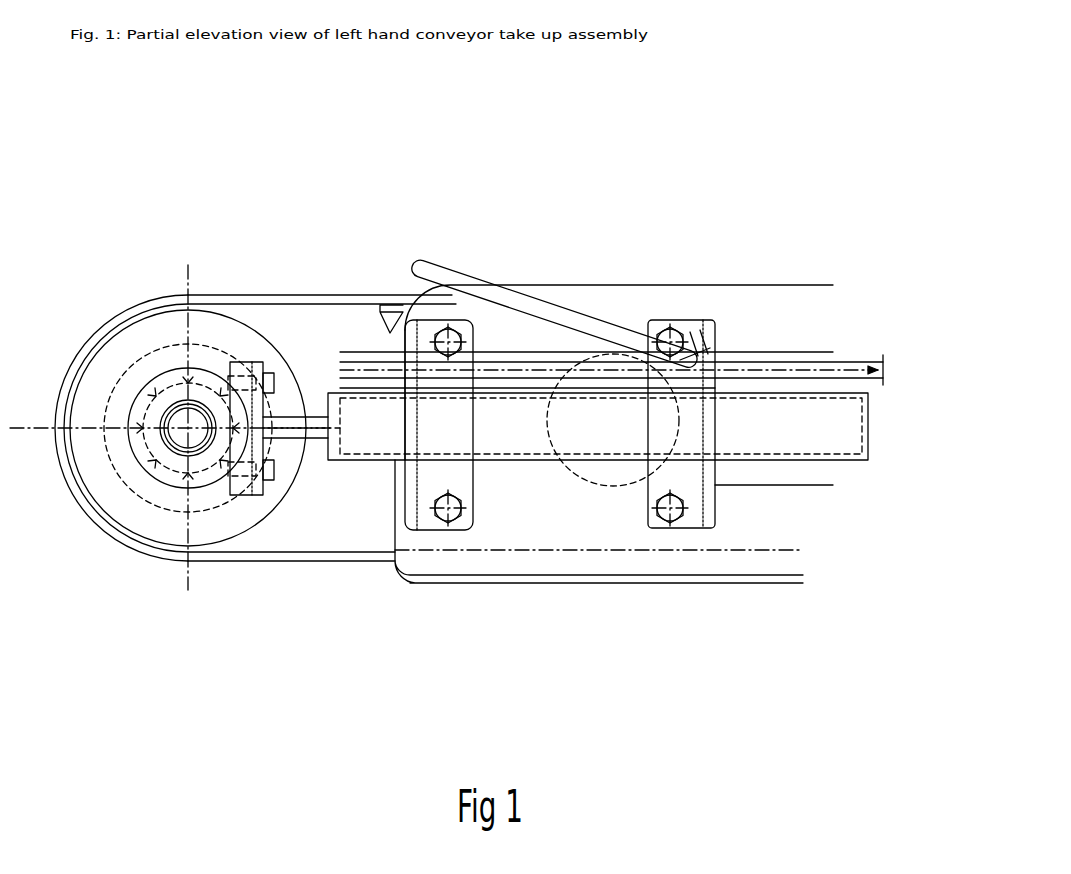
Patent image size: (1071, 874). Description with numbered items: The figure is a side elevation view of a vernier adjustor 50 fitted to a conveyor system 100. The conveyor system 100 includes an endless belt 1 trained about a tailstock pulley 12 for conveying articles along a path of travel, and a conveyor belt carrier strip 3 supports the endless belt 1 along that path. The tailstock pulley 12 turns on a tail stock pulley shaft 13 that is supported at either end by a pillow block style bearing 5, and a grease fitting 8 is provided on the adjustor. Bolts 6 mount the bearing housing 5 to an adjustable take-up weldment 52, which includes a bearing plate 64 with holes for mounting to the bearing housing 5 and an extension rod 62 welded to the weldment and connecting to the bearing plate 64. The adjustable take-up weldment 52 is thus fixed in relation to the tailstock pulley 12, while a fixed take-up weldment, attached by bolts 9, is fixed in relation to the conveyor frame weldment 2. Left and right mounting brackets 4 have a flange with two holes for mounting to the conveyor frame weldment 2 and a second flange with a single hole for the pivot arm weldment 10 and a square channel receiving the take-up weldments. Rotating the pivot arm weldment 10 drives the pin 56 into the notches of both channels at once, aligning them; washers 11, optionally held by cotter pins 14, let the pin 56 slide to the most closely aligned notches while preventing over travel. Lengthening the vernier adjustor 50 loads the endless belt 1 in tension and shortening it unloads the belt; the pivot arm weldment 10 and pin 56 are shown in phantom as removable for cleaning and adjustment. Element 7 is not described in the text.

The endless belt 1 is at (261, 292).
The conveyor frame weldment 2 is at (718, 283).
The conveyor belt carrier strip 3 is at (383, 302).
The mounting bracket 4 is at (717, 318).
The pillow block style bearing 5 is at (143, 495).
The bolts 6 is at (266, 500).
The take-up tube 7 is at (360, 462).
The grease fitting 8 is at (122, 428).
The bolts for attaching the fixed take-up weldment 9 is at (657, 522).
The pivot arm weldment 10 is at (803, 383).
The washers 11 is at (884, 384).
The tailstock pulley 12 is at (272, 535).
The tail stock pulley shaft 13 is at (174, 382).
The cotter pins 14 is at (354, 377).
The vernier adjustor 50 is at (586, 369).
The adjustable take-up weldment 52 is at (604, 352).
The pin 56 is at (673, 292).
The extension rod 62 is at (301, 401).
The bearing plate 64 is at (265, 428).
The conveyor system 100 is at (305, 270).